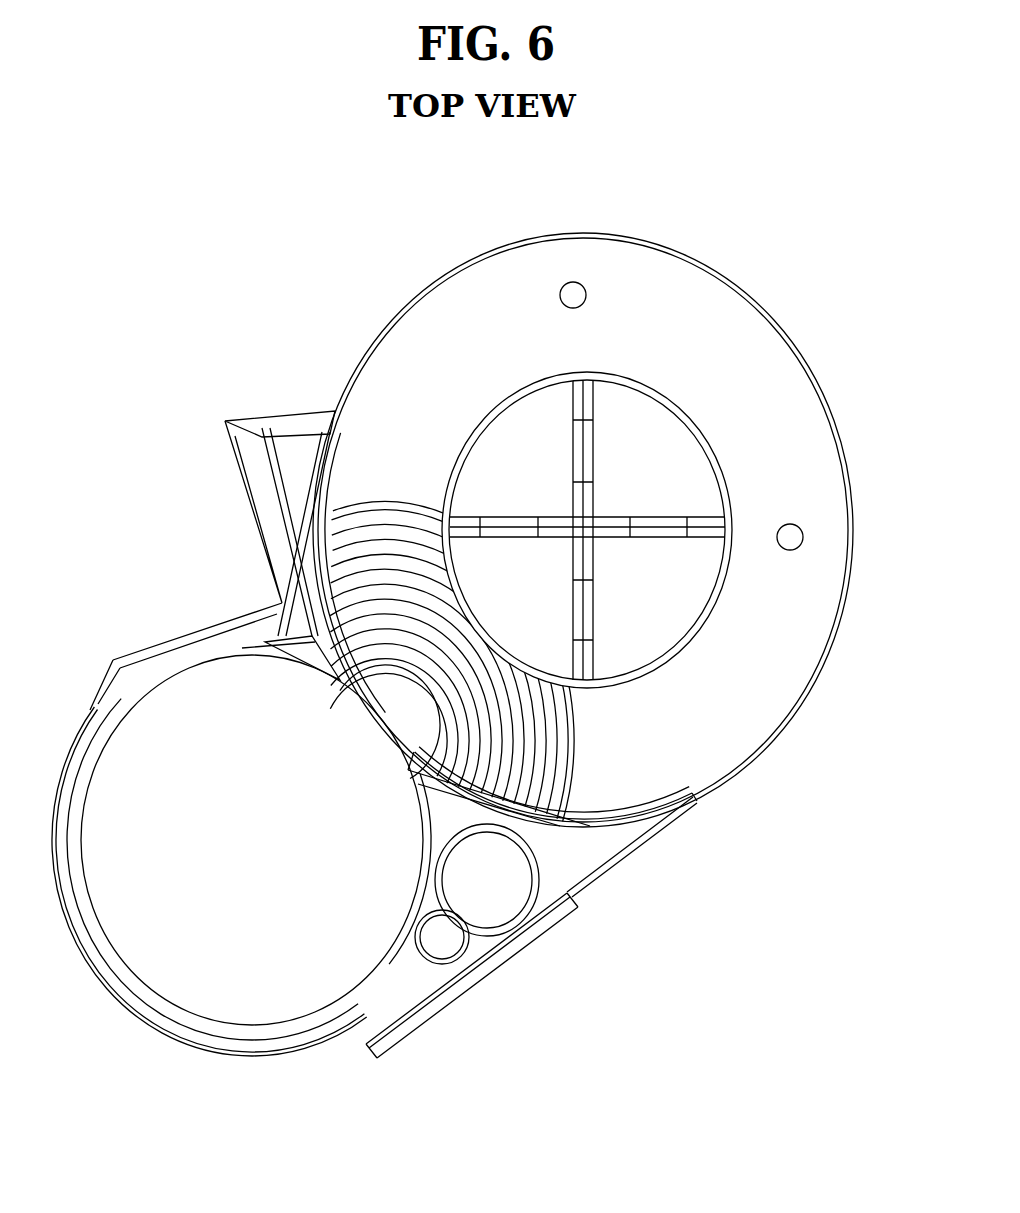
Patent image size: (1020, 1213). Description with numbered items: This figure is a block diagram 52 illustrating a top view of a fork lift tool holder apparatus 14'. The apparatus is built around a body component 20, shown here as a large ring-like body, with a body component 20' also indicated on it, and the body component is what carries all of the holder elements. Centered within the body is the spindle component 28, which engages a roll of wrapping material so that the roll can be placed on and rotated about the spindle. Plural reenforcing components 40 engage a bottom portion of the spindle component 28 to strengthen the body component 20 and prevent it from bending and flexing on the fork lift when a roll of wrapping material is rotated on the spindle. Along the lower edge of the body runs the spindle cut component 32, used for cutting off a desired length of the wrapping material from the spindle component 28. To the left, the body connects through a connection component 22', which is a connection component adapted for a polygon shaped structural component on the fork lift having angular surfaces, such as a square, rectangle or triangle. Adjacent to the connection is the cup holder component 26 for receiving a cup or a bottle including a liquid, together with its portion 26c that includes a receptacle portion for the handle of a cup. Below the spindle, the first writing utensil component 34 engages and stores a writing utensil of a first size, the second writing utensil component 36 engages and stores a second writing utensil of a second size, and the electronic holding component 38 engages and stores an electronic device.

The block diagram 52 is at (789, 138).
The fork lift tool holder apparatus 14' is at (301, 441).
The body component 20' is at (731, 371).
The body component 20 is at (583, 530).
The spindle component 28 is at (592, 468).
The connection component 22' is at (186, 645).
The portion of the cup holder component 26c is at (452, 662).
The cup holder component 26 is at (241, 855).
The spindle cut component 32 is at (692, 796).
The reenforcing component 40 is at (533, 753).
The first writing utensil component 34 is at (487, 880).
The second writing utensil component 36 is at (452, 927).
The electronic holding component 38 is at (430, 993).